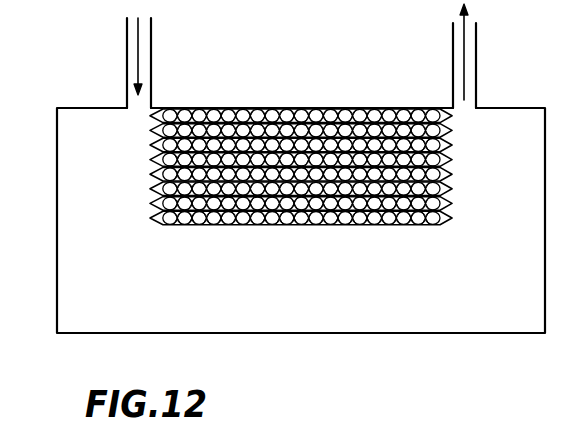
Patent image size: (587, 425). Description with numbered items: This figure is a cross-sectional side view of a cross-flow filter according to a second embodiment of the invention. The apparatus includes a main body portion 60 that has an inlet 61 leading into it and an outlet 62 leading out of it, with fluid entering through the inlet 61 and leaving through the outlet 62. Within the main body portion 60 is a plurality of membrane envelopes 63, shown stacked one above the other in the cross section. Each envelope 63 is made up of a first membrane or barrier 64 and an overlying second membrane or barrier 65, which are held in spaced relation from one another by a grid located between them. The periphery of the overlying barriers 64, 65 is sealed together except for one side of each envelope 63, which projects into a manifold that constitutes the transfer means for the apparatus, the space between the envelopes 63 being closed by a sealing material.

The main body portion 60 is at (335, 323).
The inlet 61 is at (151, 52).
The outlet 62 is at (464, 55).
The membrane envelope 63 is at (299, 205).
The first membrane or barrier 64 is at (165, 211).
The second membrane or barrier 65 is at (162, 203).